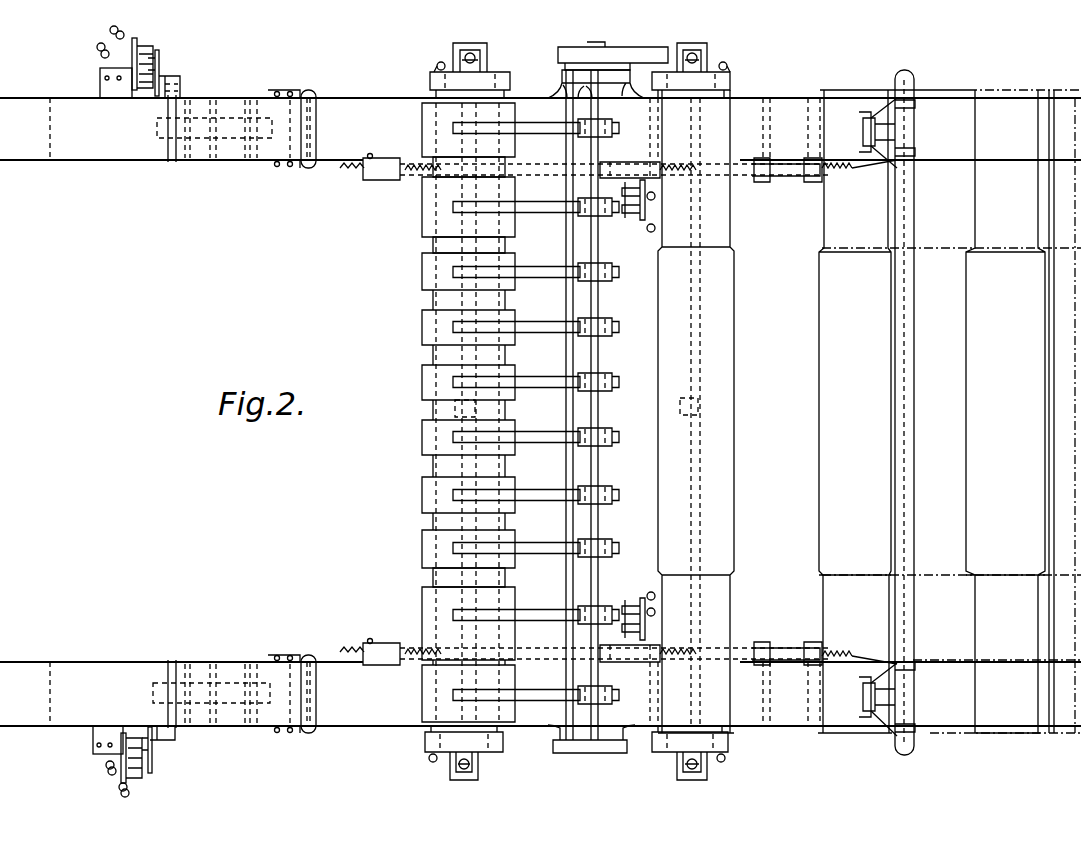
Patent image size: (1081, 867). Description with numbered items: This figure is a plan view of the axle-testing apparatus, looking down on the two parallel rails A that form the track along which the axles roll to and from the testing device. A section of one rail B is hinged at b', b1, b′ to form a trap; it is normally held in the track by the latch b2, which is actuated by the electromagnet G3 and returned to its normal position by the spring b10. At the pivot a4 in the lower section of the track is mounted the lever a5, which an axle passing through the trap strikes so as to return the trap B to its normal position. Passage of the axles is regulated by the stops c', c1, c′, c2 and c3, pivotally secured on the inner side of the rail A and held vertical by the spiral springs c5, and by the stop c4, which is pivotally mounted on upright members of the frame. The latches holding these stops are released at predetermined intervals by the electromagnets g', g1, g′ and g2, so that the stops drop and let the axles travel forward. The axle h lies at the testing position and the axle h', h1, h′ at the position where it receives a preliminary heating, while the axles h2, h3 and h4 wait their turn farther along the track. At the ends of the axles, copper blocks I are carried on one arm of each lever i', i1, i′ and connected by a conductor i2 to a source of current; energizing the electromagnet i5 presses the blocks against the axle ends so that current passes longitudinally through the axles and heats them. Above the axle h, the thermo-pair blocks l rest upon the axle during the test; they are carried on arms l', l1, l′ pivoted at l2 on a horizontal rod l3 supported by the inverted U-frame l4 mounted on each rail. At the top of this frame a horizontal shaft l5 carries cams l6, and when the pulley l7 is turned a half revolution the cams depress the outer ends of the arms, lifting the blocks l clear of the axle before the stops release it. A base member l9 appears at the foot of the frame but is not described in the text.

The rail A is at (540, 411).
The pivot in lower track section a4 is at (172, 162).
The lever a5 is at (157, 138).
The hinged rail section (trap) B is at (235, 158).
The hinge of trap b' is at (303, 427).
The hinge of trap b1 is at (303, 427).
The hinge of trap b′ is at (308, 733).
The latch b2 is at (180, 80).
The spring b10 is at (159, 62).
The electromagnet G3 is at (138, 46).
The thermo-pair block l is at (457, 412).
The arm l' is at (500, 423).
The arm l1 is at (500, 423).
The arm l′ is at (542, 711).
The pivot of arm l2 is at (559, 711).
The horizontal rod l3 is at (566, 400).
The inverted U-frame l4 is at (562, 78).
The horizontal shaft l5 is at (598, 410).
The cam l6 is at (584, 712).
The pulley l7 is at (558, 52).
The bottom base l9 is at (620, 750).
The axle h is at (452, 411).
The axle h' is at (696, 411).
The axle h1 is at (696, 411).
The axle h′ is at (693, 362).
The axle h2 is at (893, 411).
The axle h3 is at (987, 411).
The axle h4 is at (1037, 411).
The lever i' is at (556, 412).
The lever i1 is at (556, 412).
The lever i′ is at (470, 351).
The conductor i2 is at (729, 768).
The electromagnet i5 is at (660, 422).
The copper block I is at (642, 760).
The stop c' is at (585, 410).
The stop c1 is at (585, 410).
The stop c′ is at (378, 633).
The stop c2 is at (624, 672).
The stop c3 is at (781, 637).
The stop c4 is at (926, 690).
The spiral spring c5 is at (833, 670).
The electromagnet g' is at (632, 410).
The electromagnet g1 is at (632, 410).
The electromagnet g′ is at (622, 590).
The electromagnet g2 is at (885, 160).